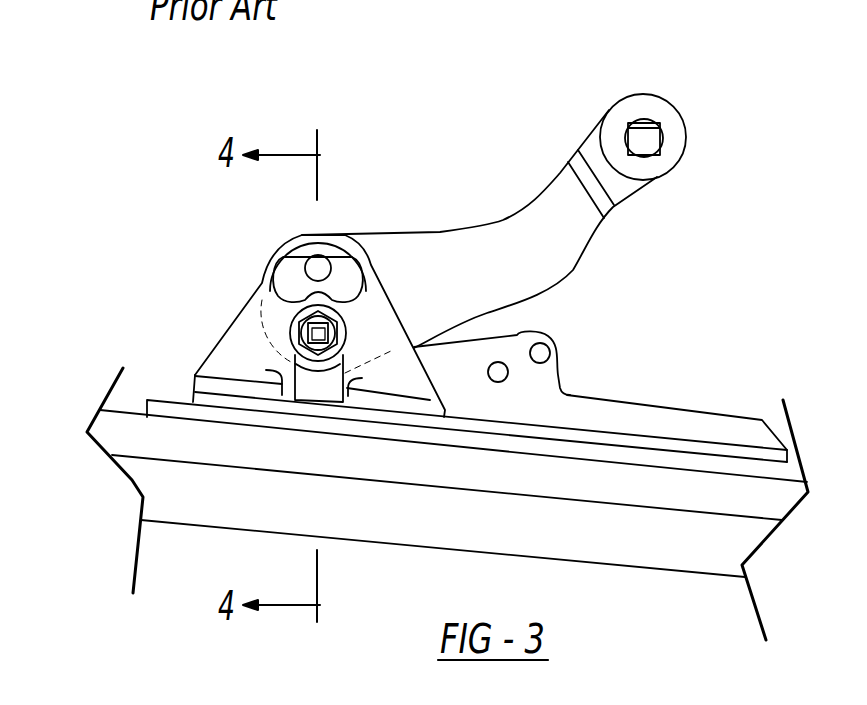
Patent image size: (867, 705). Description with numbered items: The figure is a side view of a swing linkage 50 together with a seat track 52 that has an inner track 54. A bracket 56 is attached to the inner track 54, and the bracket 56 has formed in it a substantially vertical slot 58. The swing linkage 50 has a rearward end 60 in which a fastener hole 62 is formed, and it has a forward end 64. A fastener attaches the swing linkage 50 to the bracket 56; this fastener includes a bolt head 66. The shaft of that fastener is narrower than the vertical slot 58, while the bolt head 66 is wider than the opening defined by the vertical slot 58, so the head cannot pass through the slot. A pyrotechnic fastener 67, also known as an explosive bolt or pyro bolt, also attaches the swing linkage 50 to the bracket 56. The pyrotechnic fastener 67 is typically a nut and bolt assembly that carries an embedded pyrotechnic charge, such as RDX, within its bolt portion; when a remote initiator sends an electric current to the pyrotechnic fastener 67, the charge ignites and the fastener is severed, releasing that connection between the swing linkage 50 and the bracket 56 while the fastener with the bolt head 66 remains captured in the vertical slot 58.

The swing linkage 50 is at (507, 243).
The seat track 52 is at (78, 508).
The inner track 54 is at (656, 348).
The bracket 56 is at (243, 335).
The vertical slot 58 is at (378, 578).
The rearward end 60 is at (635, 105).
The fastener hole 62 is at (763, 158).
The forward end 64 is at (283, 316).
The bolt head 66 is at (320, 333).
The pyrotechnic fastener 67 is at (318, 268).